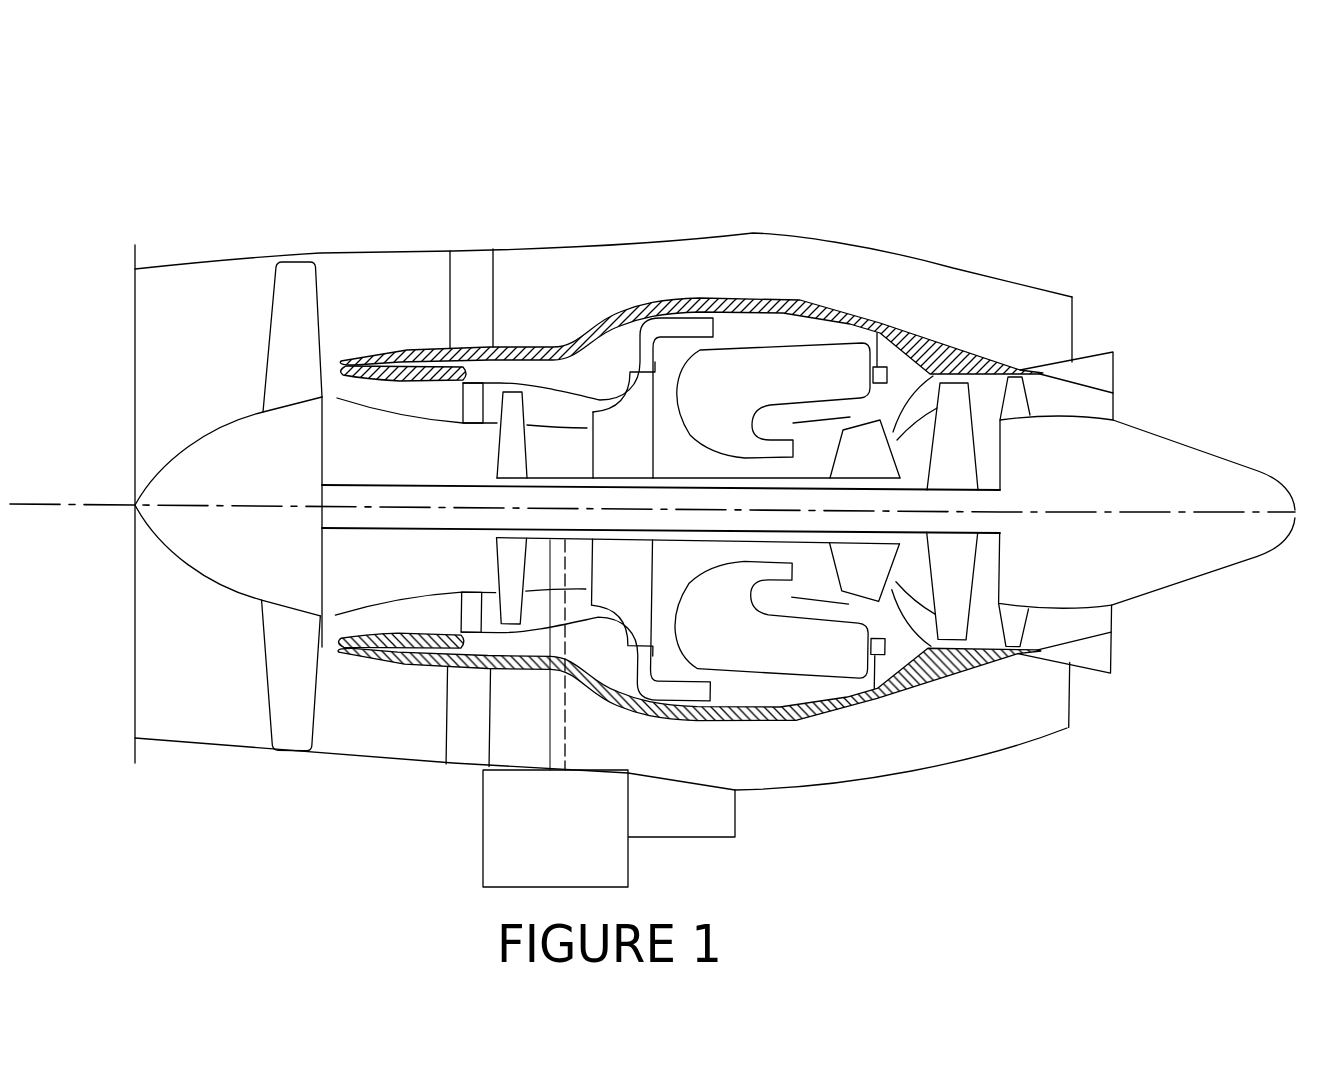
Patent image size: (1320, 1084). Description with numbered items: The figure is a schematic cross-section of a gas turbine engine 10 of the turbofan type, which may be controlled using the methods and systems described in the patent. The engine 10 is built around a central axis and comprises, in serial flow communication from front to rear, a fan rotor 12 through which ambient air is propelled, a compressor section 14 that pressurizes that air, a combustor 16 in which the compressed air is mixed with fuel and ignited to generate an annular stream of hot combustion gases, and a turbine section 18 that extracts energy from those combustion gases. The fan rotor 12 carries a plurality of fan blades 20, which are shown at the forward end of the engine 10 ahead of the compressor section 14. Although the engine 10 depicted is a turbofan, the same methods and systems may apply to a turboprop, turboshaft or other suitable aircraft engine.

The gas turbine engine 10 is at (940, 180).
The fan rotor 12 is at (283, 347).
The compressor section 14 is at (550, 403).
The combustor 16 is at (775, 363).
The turbine section 18 is at (908, 580).
The fan blades 20 is at (287, 665).